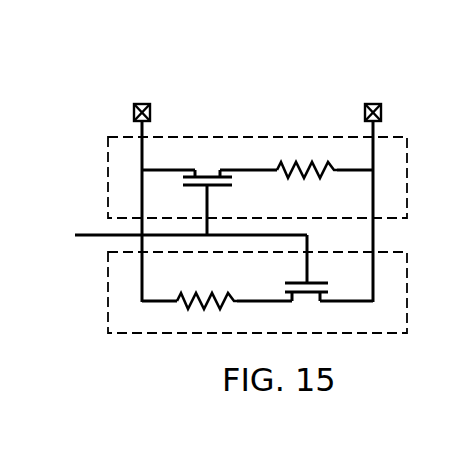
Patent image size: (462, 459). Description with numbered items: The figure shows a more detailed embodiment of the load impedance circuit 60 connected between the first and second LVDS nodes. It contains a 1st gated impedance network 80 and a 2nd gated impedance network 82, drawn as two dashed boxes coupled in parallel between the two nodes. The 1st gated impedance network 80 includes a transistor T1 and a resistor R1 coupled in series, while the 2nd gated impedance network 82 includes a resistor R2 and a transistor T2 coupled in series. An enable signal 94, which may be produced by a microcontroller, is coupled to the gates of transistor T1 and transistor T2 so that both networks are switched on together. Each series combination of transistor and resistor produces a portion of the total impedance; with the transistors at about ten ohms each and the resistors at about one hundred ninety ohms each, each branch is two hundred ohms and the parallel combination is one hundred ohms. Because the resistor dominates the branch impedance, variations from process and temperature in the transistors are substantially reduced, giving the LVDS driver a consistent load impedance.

The load impedance circuit 60 is at (352, 424).
The 1st gated impedance network 80 is at (222, 137).
The 2nd gated impedance network 82 is at (176, 333).
The enable signal 94 is at (178, 237).
The transistor T1 is at (207, 188).
The transistor T2 is at (306, 305).
The resistor R1 is at (307, 187).
The resistor R2 is at (207, 284).